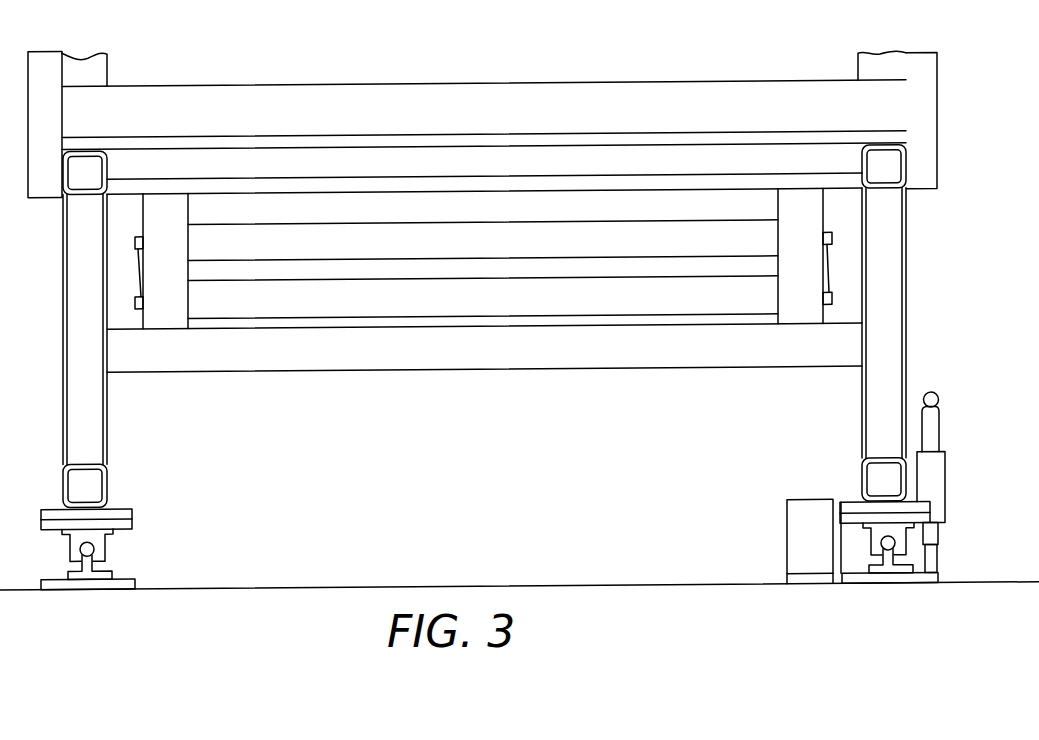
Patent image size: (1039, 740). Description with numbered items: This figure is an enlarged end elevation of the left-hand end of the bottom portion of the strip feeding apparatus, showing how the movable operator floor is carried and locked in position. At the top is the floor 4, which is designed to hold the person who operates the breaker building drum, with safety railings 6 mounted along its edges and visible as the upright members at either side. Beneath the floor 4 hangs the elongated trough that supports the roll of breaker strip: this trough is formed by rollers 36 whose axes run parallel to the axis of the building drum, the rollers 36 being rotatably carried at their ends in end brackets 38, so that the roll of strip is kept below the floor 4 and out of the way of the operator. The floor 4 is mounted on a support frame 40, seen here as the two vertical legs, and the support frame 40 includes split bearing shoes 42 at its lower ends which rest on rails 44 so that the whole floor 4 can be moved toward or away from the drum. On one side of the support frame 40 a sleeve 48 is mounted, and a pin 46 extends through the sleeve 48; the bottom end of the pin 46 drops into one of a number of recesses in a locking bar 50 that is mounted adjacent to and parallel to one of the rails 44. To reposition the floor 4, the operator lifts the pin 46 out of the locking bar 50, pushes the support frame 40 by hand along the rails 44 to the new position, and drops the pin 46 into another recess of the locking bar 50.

The floor 4 is at (632, 140).
The safety railings 6 is at (930, 70).
The rollers 36 is at (389, 250).
The end brackets 38 is at (145, 218).
The support frame 40 is at (107, 416).
The split bearing shoes 42 is at (102, 547).
The rails 44 is at (88, 573).
The pin 46 is at (933, 438).
The sleeve 48 is at (935, 486).
The locking bar 50 is at (930, 573).